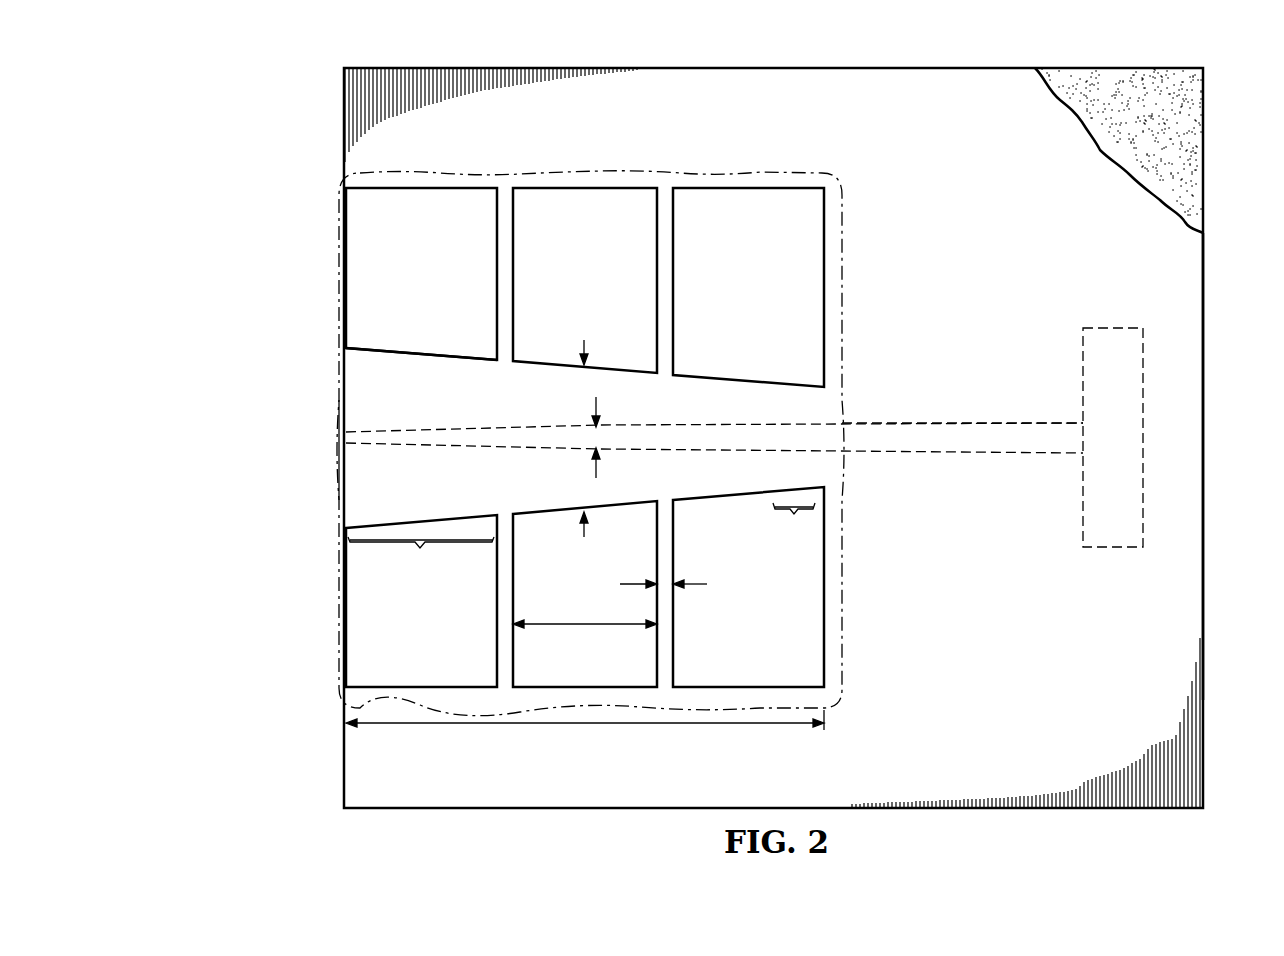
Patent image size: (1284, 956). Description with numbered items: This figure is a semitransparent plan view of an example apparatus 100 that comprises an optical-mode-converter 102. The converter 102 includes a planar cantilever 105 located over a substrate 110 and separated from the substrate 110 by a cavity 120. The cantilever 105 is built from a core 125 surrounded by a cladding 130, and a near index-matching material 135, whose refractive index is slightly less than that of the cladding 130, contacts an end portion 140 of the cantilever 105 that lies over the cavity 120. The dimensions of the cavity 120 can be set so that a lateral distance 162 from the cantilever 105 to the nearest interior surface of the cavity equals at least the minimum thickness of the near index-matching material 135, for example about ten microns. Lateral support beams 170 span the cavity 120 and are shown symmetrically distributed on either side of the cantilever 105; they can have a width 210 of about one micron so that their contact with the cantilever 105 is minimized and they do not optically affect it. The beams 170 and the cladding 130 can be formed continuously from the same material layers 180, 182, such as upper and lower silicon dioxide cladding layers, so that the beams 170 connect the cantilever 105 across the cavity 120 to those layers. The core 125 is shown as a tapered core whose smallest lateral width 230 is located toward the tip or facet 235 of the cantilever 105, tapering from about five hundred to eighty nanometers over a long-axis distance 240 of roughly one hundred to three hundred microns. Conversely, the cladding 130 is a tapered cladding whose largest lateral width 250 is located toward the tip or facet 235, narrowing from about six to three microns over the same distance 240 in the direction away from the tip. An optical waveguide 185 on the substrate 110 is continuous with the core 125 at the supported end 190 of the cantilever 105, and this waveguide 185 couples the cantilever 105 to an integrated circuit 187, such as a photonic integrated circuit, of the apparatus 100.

The apparatus 100 is at (236, 136).
The optical-mode-converter 102 is at (1212, 649).
The cantilever 105 is at (398, 346).
The substrate 110 is at (1205, 746).
The cavity 120 is at (440, 643).
The core 125 is at (424, 449).
The cladding 130 is at (436, 350).
The near index-matching material 135 is at (765, 172).
The end portion 140 is at (421, 557).
The lateral distance 162 is at (585, 628).
The lateral support beams 170 is at (497, 250).
The material layer 180 is at (1200, 117).
The material layer 182 is at (1198, 270).
The optical waveguide 185 is at (1003, 422).
The integrated circuit 187 is at (1118, 549).
The supported end 190 is at (794, 523).
The width 210 is at (697, 585).
The lateral width 230 is at (596, 474).
The tip or facet 235 is at (330, 425).
The distance 240 is at (576, 725).
The lateral width 250 is at (584, 342).